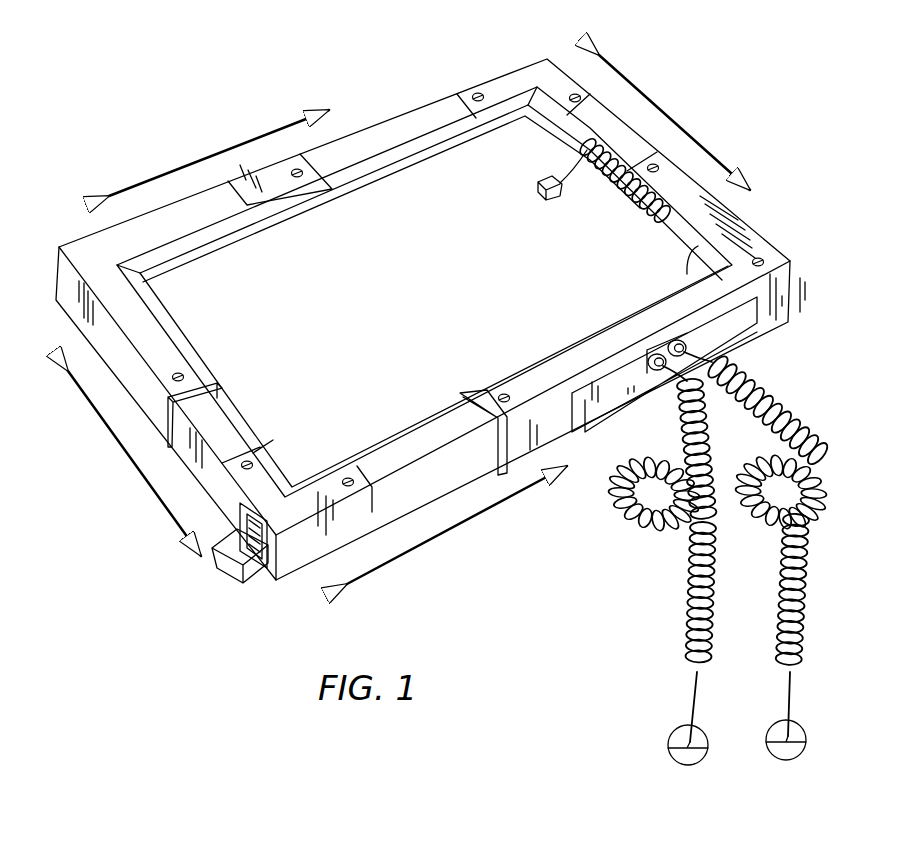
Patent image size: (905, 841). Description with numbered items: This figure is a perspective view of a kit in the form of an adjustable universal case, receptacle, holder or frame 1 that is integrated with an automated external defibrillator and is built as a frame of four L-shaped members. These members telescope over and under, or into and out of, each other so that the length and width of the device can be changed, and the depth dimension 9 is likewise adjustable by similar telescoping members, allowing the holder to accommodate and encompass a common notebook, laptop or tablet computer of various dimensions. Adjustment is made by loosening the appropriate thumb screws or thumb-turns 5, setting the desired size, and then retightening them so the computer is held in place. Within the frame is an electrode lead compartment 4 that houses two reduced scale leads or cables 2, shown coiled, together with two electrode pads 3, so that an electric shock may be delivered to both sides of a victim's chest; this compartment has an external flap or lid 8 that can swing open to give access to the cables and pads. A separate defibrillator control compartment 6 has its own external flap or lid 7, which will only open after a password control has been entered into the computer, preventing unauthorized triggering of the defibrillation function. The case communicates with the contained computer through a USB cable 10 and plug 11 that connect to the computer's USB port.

The adjustable universal case, receptacle, holder or frame 1 is at (412, 108).
The reduced scale leads or cables 2 is at (775, 660).
The electrode pads 3 is at (768, 760).
The electrode lead compartment 4 is at (705, 330).
The thumb screw or thumb-turn 5 is at (575, 94).
The defibrillator control compartment 6 is at (254, 530).
The external flap or lid of the defibrillator control compartment 7 is at (238, 553).
The external flap or lid of the electrode lead compartment 8 is at (730, 345).
The depth dimension 9 is at (253, 133).
The USB cable 10 is at (630, 203).
The plug 11 is at (538, 186).